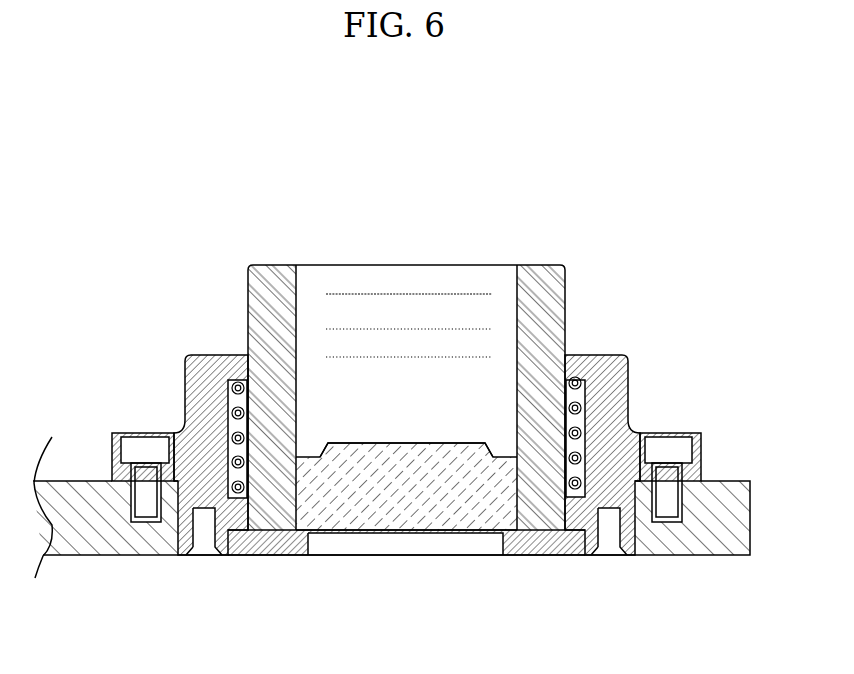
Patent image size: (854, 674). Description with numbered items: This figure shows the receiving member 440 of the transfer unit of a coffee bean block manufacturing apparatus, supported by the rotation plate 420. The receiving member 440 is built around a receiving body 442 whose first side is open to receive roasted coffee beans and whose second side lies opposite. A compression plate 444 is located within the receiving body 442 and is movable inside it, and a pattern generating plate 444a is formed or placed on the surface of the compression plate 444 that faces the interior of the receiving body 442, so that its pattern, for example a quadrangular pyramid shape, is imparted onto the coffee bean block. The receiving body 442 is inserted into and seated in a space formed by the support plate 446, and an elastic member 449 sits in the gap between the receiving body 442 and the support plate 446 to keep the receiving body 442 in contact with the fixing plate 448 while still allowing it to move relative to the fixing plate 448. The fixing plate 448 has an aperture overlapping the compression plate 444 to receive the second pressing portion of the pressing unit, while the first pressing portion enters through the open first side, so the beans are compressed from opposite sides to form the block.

The receiving member 440 is at (52, 136).
The rotation plate 420 is at (122, 543).
The receiving body 442 is at (555, 308).
The compression plate 444 is at (452, 513).
The pattern generating plate 444a is at (403, 438).
The support plate 446 is at (702, 476).
The fixing plate 448 is at (550, 555).
The elastic member 449 is at (585, 393).